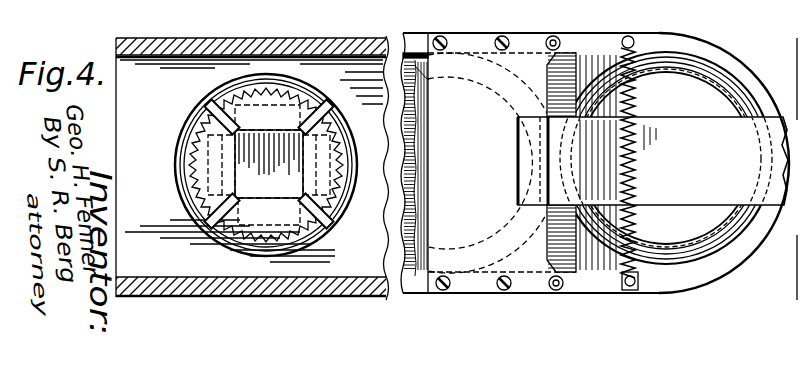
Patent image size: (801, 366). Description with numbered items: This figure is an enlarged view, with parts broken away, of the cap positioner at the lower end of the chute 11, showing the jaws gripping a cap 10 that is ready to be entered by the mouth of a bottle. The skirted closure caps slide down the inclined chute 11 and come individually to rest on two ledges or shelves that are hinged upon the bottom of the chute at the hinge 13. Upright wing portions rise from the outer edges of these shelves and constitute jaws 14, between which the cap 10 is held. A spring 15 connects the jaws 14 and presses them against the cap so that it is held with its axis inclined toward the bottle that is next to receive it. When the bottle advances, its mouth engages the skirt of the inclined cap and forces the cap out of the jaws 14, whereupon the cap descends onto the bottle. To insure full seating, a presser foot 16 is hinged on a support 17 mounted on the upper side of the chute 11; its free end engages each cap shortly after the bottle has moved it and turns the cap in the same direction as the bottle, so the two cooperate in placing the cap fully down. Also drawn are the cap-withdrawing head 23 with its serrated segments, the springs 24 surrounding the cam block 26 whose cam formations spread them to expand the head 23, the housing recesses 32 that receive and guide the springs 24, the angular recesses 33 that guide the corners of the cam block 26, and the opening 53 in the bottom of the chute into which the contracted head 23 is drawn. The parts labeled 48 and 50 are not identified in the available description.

The cap 10 is at (420, 229).
The chute 11 is at (333, 37).
The hinge 13 is at (557, 38).
The upright wing portions (jaws) 14 is at (685, 43).
The spring 15 is at (637, 102).
The presser foot 16 is at (653, 158).
The support 17 is at (480, 42).
The head 23 is at (215, 217).
The springs 24 is at (276, 181).
The cam block 26 is at (193, 178).
The recesses 32 is at (203, 140).
The angular recesses 33 is at (318, 109).
The wall line 48 is at (251, 148).
The housing section 50 is at (227, 155).
The opening 53 is at (233, 93).